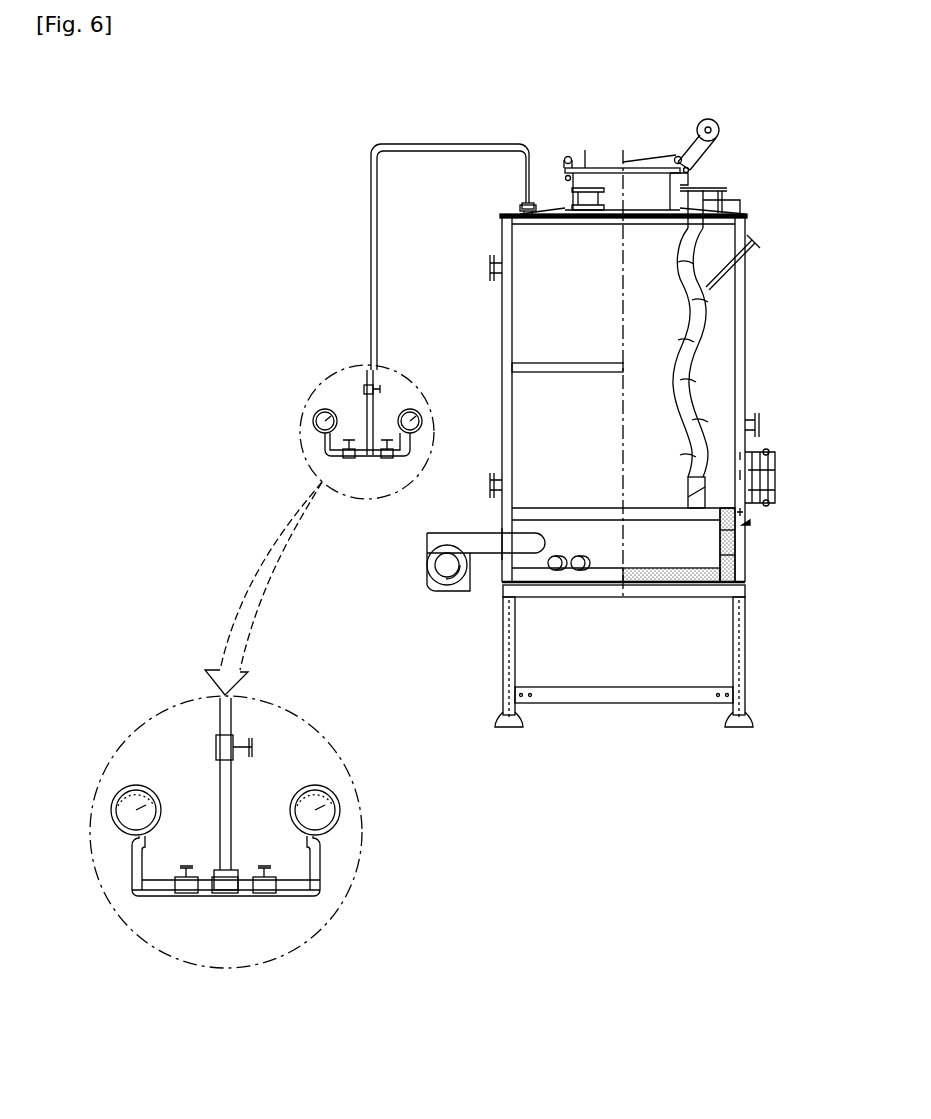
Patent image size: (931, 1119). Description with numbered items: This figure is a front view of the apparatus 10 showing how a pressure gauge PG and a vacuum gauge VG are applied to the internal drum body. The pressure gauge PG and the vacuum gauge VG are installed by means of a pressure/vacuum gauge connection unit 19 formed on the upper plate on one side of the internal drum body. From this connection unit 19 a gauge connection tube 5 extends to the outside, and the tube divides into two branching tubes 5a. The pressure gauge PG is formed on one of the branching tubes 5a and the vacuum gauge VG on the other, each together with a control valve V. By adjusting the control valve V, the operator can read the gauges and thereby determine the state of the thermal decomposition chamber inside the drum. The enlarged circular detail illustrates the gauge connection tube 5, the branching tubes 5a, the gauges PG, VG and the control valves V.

The vacuum processing apparatus 10 is at (766, 126).
The gauge connection tube 5 is at (402, 142).
The branching tubes 5a is at (243, 893).
The pressure/vacuum gauge connection unit 19 is at (535, 203).
The pressure gauge PG is at (136, 785).
The vacuum gauge VG is at (315, 785).
The control valve V is at (258, 745).